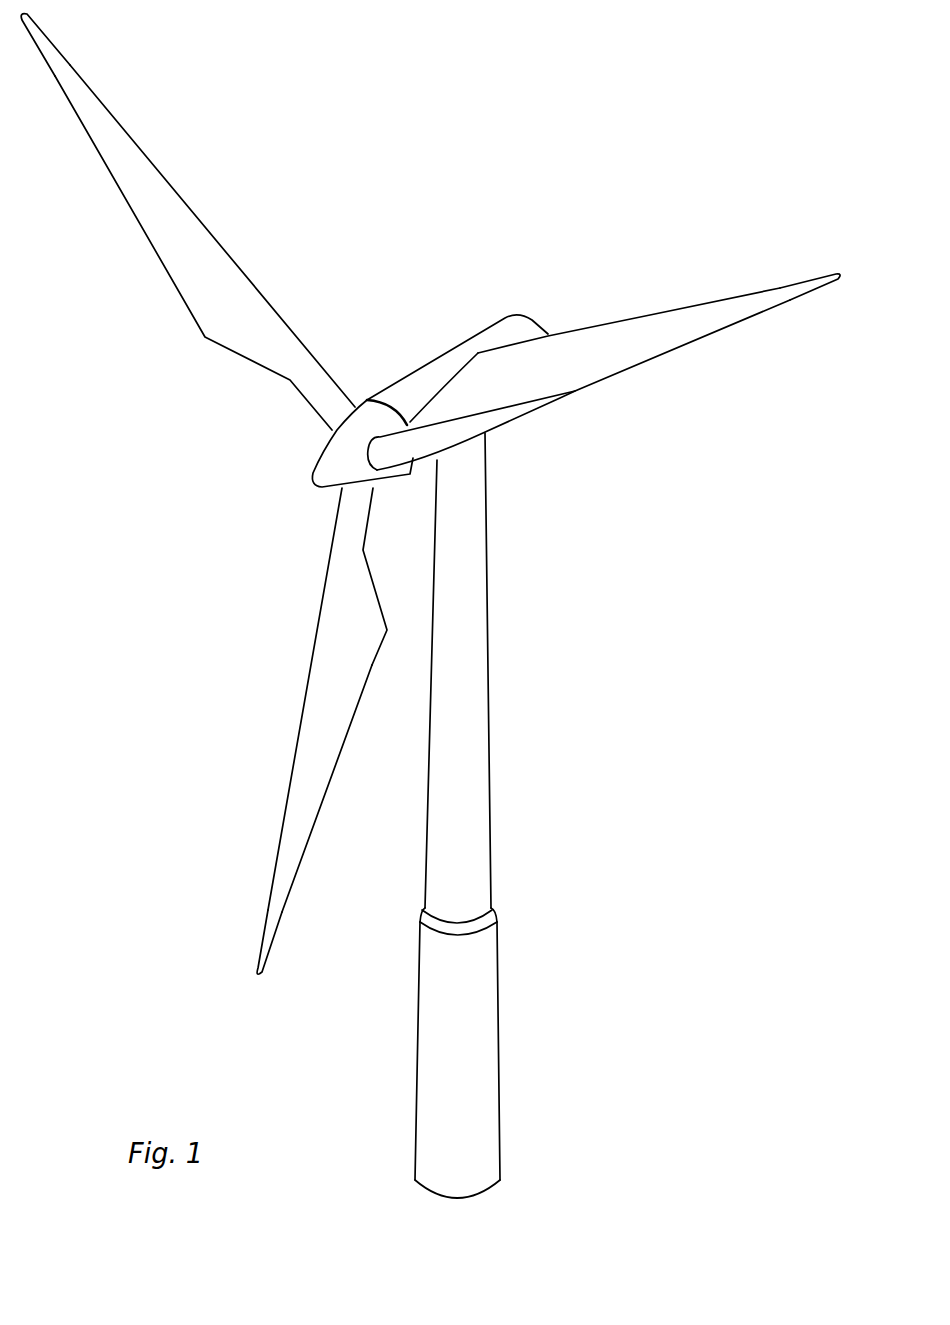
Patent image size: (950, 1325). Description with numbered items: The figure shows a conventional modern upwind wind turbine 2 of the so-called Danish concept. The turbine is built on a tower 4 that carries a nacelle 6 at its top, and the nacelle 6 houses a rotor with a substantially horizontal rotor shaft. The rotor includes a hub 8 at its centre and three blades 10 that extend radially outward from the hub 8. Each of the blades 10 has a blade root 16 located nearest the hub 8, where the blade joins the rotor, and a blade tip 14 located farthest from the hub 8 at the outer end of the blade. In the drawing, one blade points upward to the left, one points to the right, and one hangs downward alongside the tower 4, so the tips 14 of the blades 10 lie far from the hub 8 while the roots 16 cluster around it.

The wind turbine 2 is at (583, 752).
The tower 4 is at (475, 677).
The nacelle 6 is at (423, 378).
The hub 8 is at (330, 463).
The blade 10 is at (220, 313).
The blade tip 14 is at (65, 73).
The blade root 16 is at (337, 418).